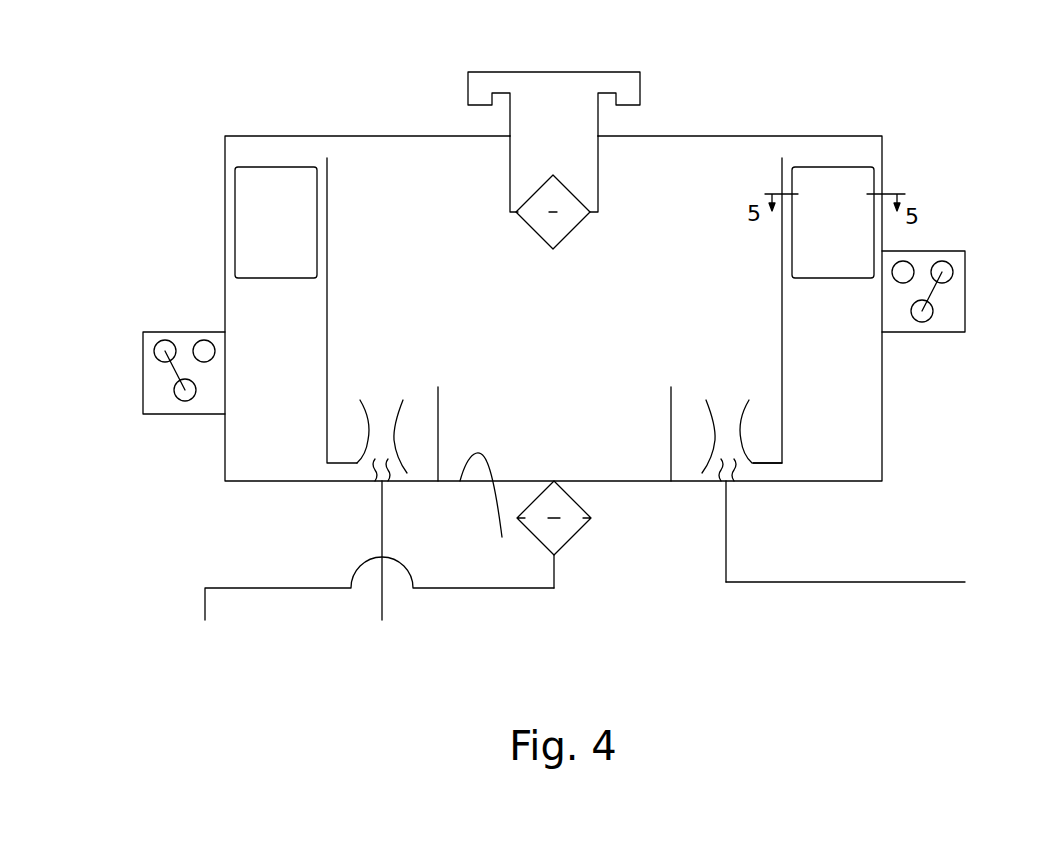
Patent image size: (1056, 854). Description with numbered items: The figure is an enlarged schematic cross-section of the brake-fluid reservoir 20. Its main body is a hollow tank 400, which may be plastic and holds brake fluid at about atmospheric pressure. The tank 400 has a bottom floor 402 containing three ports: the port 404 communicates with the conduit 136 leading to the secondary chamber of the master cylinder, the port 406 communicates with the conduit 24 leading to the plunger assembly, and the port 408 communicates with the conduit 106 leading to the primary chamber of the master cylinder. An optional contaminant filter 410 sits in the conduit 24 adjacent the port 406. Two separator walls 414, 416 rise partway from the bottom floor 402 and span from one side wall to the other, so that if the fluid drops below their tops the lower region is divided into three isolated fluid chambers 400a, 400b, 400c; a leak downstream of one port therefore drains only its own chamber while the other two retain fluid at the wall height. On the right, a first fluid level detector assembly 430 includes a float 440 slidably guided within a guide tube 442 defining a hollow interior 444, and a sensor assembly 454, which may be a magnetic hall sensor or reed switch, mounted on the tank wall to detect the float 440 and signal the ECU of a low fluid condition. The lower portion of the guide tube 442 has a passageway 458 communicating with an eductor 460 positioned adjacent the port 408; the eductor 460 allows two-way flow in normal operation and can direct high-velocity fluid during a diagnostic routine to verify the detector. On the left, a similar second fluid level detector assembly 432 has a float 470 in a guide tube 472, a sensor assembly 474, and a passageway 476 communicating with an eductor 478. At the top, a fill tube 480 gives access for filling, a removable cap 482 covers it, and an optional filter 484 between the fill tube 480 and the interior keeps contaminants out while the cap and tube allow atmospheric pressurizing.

The reservoir 20 is at (939, 87).
The conduit 24 is at (488, 590).
The conduit 106 is at (913, 583).
The conduit 136 is at (385, 597).
The tank 400 is at (650, 136).
The fluid chamber 400a is at (417, 427).
The fluid chamber 400b is at (543, 417).
The fluid chamber 400c is at (688, 427).
The bottom floor 402 is at (492, 509).
The port 404 is at (378, 483).
The port 406 is at (558, 484).
The port 408 is at (727, 482).
The contaminant filter 410 is at (572, 537).
The separator wall 414 is at (440, 404).
The separator wall 416 is at (668, 407).
The first fluid level detector assembly 430 is at (954, 164).
The second fluid level detector assembly 432 is at (140, 185).
The float 440 is at (825, 193).
The guide tube 442 is at (782, 173).
The hollow interior 444 is at (782, 327).
The sensor assembly 454 is at (962, 249).
The passageway 458 is at (765, 472).
The eductor 460 is at (770, 426).
The float 470 is at (262, 203).
The guide tube 472 is at (328, 195).
The sensor assembly 474 is at (141, 330).
The passageway 476 is at (337, 470).
The eductor 478 is at (336, 439).
The fill tube 480 is at (580, 158).
The removable cap 482 is at (467, 92).
The filter 484 is at (547, 225).